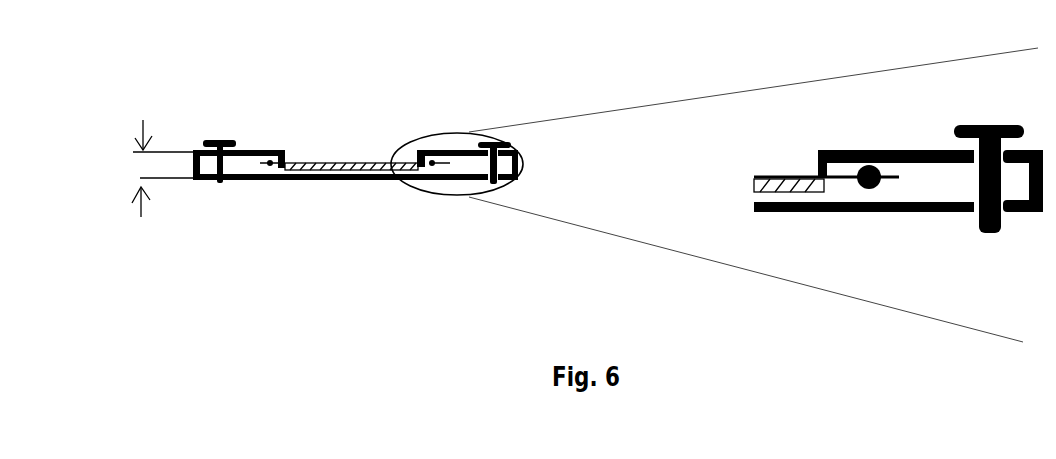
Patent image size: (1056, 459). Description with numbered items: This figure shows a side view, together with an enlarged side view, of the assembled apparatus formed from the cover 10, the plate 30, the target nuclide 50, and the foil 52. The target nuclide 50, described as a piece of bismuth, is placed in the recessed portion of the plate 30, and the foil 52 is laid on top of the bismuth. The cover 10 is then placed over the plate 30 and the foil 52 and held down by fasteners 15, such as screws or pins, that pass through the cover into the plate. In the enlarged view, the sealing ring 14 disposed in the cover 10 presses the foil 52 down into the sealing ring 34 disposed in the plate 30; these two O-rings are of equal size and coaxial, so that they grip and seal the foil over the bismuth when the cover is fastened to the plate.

The cover 10 is at (263, 149).
The sealing ring 14 is at (873, 190).
The fastener 15 is at (217, 140).
The plate 30 is at (248, 184).
The sealing ring 34 is at (880, 163).
The target nuclide 50 is at (786, 185).
The foil 52 is at (791, 177).